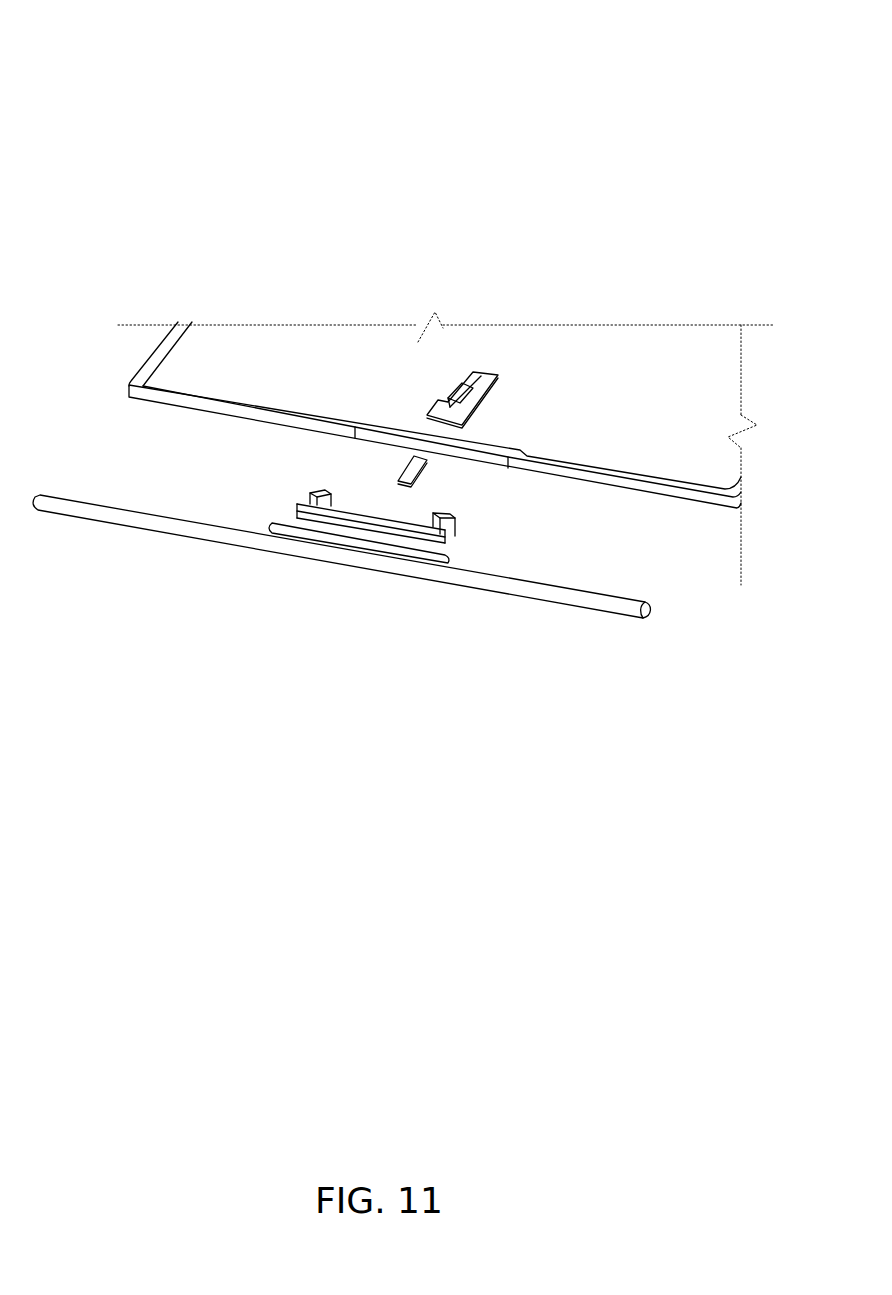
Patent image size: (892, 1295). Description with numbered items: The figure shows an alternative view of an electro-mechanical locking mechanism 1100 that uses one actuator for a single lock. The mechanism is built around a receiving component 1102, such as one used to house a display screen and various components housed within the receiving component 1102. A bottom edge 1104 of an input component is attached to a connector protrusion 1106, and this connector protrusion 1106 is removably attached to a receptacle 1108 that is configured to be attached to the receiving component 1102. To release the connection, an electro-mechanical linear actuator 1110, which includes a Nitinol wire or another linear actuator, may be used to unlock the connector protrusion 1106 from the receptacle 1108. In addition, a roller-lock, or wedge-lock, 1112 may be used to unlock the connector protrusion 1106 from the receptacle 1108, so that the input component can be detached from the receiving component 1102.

The electro-mechanical locking mechanism 1100 is at (122, 97).
The receiving component 1102 is at (583, 370).
The bottom edge 1104 is at (157, 536).
The connector protrusion 1106 is at (297, 523).
The receptacle 1108 is at (447, 535).
The electro-mechanical linear actuator 1110 is at (432, 371).
The roller-lock 1112 is at (440, 489).